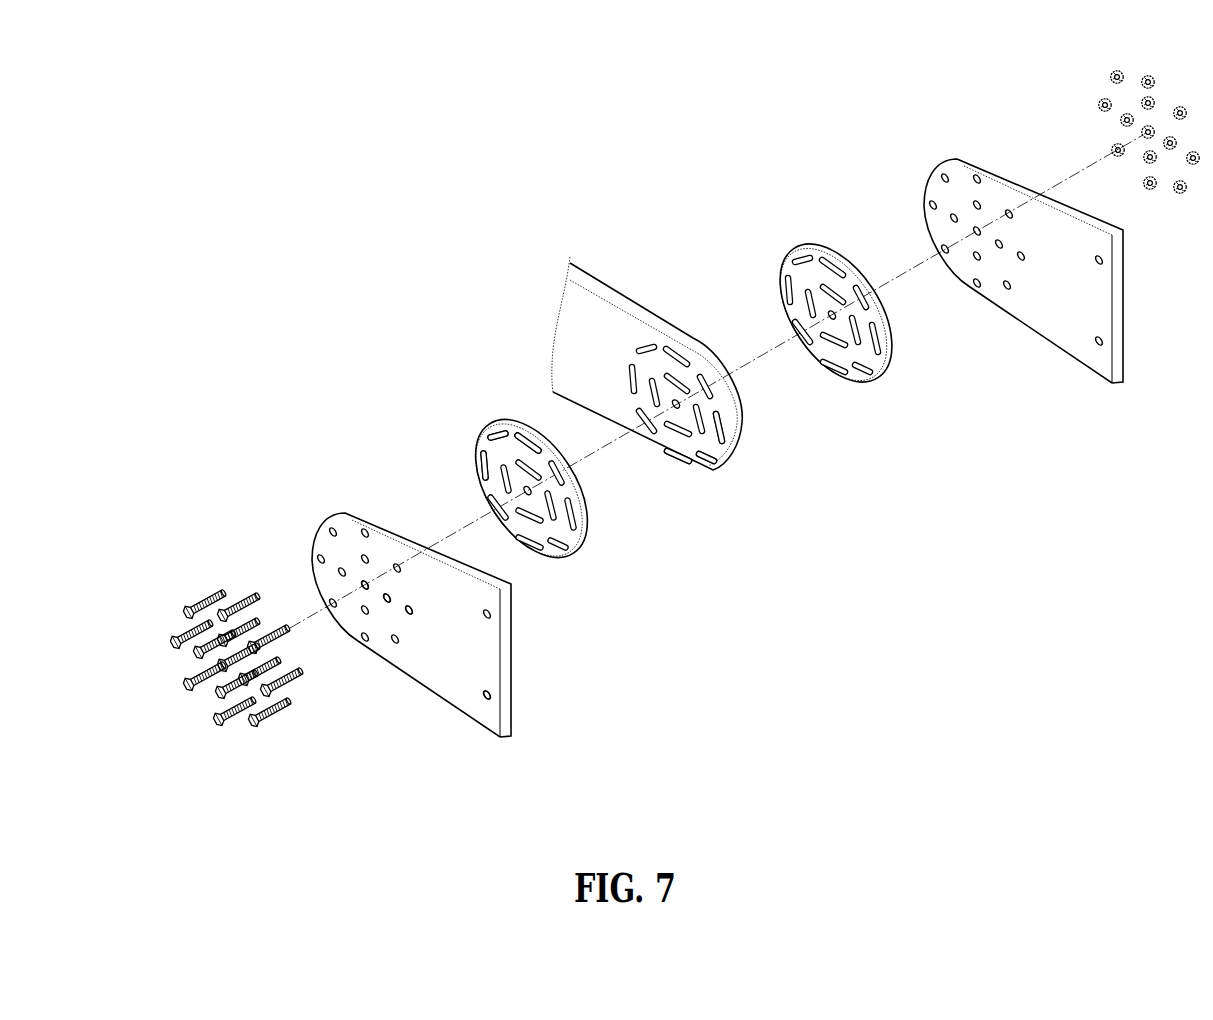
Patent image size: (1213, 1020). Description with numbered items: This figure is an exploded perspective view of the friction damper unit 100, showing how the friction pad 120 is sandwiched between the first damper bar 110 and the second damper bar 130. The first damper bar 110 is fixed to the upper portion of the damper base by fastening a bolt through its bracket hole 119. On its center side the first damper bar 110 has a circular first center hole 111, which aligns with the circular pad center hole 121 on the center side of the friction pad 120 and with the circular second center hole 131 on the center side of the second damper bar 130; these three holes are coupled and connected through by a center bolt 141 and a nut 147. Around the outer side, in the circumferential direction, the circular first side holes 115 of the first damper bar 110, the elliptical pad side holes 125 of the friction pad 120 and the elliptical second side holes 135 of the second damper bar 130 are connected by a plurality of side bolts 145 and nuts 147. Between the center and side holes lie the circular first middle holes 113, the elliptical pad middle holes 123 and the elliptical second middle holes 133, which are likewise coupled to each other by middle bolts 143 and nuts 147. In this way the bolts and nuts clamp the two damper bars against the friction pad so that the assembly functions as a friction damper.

The friction damper unit 100 is at (153, 495).
The first damper bar 110 is at (448, 663).
The first center hole 111 is at (365, 590).
The first middle holes 113 is at (387, 603).
The first side holes 115 is at (408, 615).
The bracket hole 119 is at (487, 700).
The friction pad 120 is at (548, 557).
The pad center hole 121 is at (473, 457).
The pad middle holes 123 is at (488, 435).
The pad side holes 125 is at (505, 422).
The second damper bar 130 is at (573, 328).
The second center hole 131 is at (693, 450).
The second middle holes 133 is at (716, 452).
The second side holes 135 is at (728, 448).
The center bolt 141 is at (198, 668).
The middle bolts 143 is at (216, 694).
The side bolts 145 is at (213, 727).
The nuts 147 is at (1140, 77).